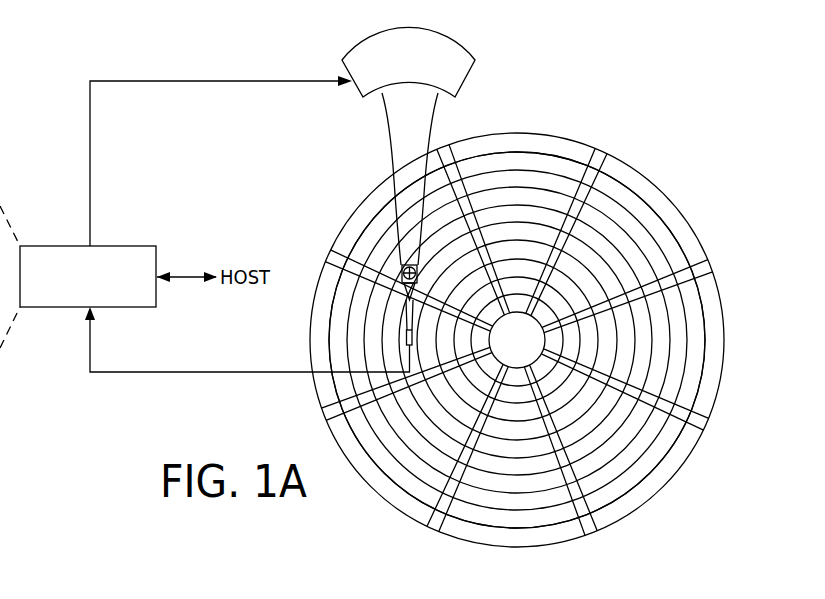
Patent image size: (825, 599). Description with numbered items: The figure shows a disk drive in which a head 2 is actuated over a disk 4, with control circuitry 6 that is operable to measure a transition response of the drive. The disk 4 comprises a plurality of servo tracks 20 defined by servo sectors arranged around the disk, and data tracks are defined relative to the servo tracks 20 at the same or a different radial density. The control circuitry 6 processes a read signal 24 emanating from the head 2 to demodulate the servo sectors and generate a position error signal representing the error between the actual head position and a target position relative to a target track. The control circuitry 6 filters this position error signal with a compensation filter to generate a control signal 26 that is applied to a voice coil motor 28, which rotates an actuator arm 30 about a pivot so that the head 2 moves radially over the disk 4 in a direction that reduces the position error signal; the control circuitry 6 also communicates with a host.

The head 2 is at (396, 343).
The disk 4 is at (661, 180).
The control circuitry 6 is at (127, 246).
The servo tracks 20 is at (519, 160).
The read signal 24 is at (212, 372).
The control signal 26 is at (90, 147).
The voice coil motor 28 is at (356, 92).
The actuator arm 30 is at (389, 148).